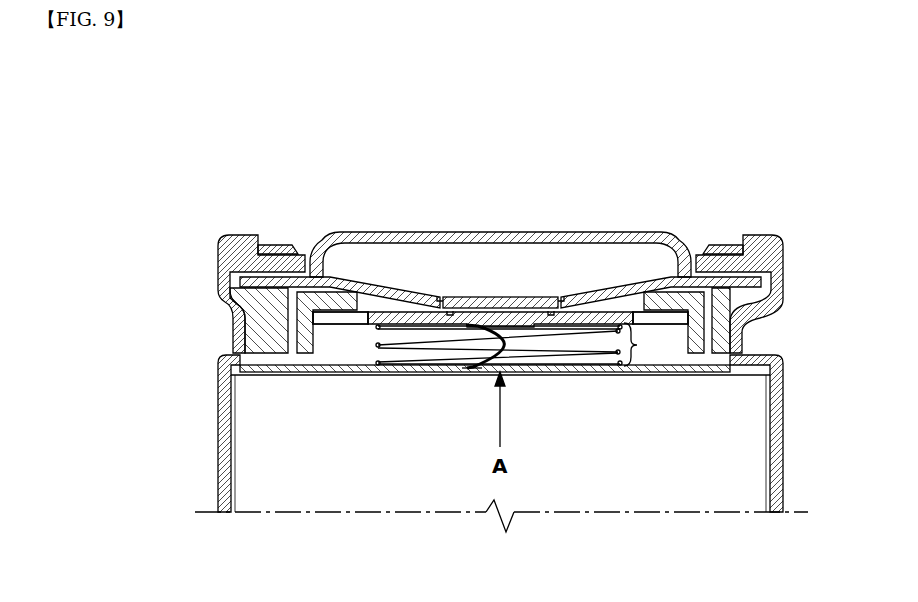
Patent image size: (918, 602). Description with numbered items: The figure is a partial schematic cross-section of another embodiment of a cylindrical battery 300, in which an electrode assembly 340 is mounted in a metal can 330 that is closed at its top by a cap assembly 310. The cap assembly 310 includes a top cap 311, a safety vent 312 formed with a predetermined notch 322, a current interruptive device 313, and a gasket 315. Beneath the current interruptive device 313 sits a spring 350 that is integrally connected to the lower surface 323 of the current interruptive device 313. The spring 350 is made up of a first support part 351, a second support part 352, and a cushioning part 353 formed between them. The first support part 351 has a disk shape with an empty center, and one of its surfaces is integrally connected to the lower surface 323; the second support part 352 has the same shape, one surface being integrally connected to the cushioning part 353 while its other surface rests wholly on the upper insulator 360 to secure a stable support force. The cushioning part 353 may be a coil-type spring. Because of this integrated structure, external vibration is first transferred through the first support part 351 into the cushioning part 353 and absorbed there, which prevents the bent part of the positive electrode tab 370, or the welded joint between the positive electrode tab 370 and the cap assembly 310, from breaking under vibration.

The cylindrical battery 300 is at (206, 82).
The cap assembly 310 is at (318, 229).
The top cap 311 is at (510, 233).
The safety vent 312 is at (613, 292).
The current interruptive device 313 is at (417, 316).
The gasket 315 is at (716, 247).
The notch 322 is at (558, 300).
The lower surface 323 is at (380, 297).
The metal can 330 is at (230, 430).
The electrode assembly 340 is at (255, 471).
The spring 350 is at (372, 343).
The first support part 351 is at (510, 328).
The second support part 352 is at (520, 350).
The cushioning part 353 is at (640, 344).
The upper insulator 360 is at (273, 369).
The positive electrode tab 370 is at (478, 370).